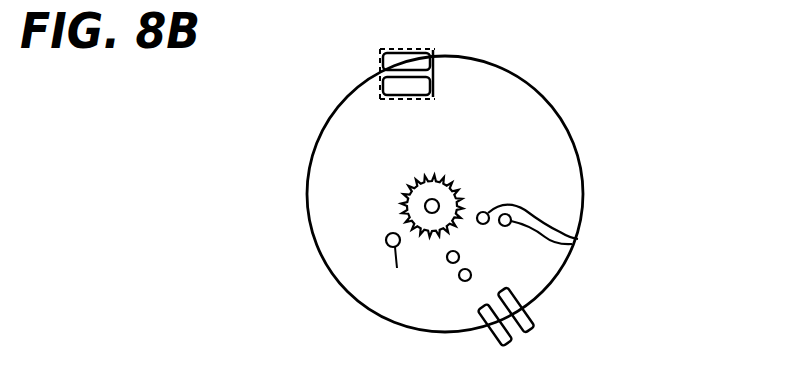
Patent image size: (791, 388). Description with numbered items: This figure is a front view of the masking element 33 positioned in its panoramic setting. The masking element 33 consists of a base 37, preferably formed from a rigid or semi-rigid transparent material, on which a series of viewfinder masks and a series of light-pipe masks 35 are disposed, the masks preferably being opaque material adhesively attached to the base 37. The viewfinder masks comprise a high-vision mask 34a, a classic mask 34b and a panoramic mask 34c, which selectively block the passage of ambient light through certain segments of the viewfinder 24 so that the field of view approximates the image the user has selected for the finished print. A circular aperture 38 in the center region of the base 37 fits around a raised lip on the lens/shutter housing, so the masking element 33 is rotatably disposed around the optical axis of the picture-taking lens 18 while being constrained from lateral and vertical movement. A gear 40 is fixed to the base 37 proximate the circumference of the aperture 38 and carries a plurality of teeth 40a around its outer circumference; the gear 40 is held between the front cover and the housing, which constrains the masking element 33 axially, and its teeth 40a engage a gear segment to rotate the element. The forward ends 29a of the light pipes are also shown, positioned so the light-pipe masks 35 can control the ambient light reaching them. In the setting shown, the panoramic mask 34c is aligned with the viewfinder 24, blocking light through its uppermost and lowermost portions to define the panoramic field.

The picture-taking lens 18 is at (425, 206).
The viewfinder 24 is at (433, 72).
The forward end of light pipe 29a is at (578, 239).
The masking element 33 is at (553, 106).
The high-vision mask 34a is at (580, 158).
The classic mask 34b is at (522, 342).
The panoramic mask 34c is at (380, 58).
The light-pipe masks 35 is at (459, 278).
The base 37 is at (330, 253).
The circular aperture 38 is at (351, 162).
The gear 40 is at (460, 178).
The teeth 40a is at (428, 131).